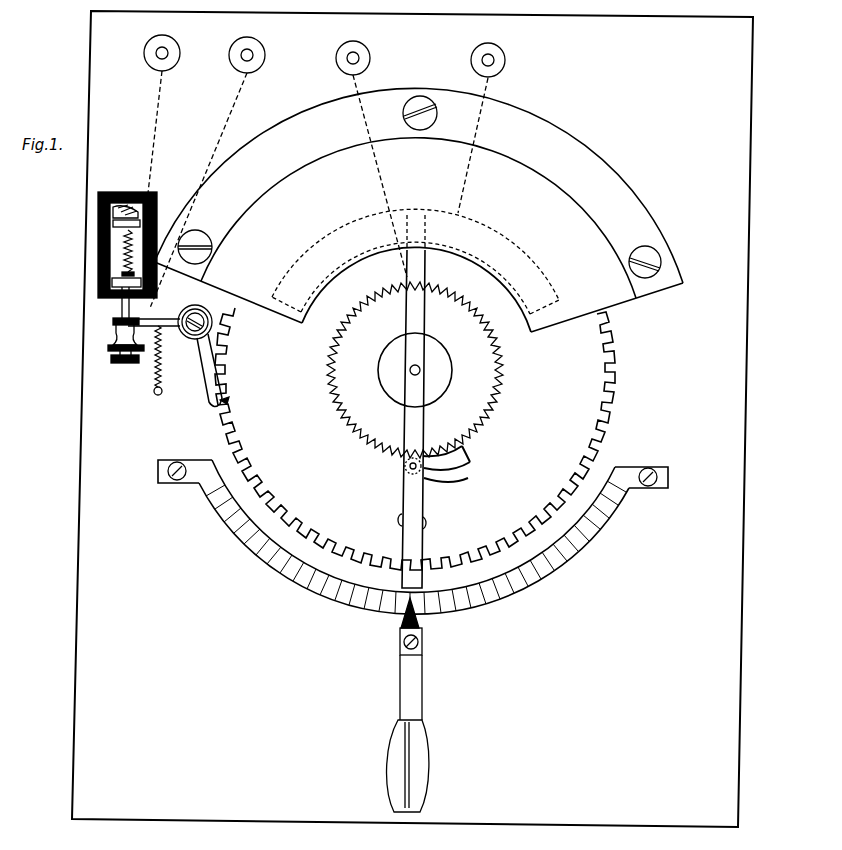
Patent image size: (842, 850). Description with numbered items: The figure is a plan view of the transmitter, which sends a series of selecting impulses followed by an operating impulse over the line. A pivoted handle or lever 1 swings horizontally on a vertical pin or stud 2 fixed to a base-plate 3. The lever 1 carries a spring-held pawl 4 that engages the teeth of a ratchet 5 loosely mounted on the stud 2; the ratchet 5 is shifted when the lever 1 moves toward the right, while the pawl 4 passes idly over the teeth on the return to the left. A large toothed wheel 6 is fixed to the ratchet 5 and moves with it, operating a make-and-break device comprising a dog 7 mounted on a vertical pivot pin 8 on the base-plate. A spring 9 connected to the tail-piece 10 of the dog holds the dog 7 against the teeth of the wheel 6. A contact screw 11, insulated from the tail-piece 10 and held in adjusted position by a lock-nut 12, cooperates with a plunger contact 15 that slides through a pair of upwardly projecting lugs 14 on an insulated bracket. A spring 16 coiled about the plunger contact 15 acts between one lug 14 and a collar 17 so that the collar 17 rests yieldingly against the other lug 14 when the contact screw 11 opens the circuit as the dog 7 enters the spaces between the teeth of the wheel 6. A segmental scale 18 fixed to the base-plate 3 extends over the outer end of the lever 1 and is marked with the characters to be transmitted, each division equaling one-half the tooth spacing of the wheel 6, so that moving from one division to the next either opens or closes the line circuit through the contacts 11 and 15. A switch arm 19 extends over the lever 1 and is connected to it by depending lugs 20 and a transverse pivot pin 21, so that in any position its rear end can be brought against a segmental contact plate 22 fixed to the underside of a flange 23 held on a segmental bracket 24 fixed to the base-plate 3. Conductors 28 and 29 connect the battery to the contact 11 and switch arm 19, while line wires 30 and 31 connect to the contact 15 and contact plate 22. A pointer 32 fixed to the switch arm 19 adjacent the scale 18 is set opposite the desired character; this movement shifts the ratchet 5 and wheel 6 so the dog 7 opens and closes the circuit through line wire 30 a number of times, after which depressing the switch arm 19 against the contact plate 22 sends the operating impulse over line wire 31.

The pivoted handle or lever 1 is at (422, 750).
The vertical pin or stud 2 is at (421, 370).
The base-plate 3 is at (722, 668).
The spring-held pawl 4 is at (448, 458).
The ratchet 5 is at (466, 424).
The large toothed wheel 6 is at (252, 428).
The dog 7 is at (200, 380).
The vertical pivot pin 8 is at (200, 308).
The spring 9 is at (158, 395).
The tail-piece 10 is at (194, 312).
The contact screw 11 is at (120, 363).
The lock-nut 12 is at (110, 340).
The upwardly projecting lugs 14 is at (120, 300).
The plunger contact 15 is at (113, 321).
The spring 16 is at (126, 258).
The collar 17 is at (127, 245).
The segmental scale 18 is at (545, 556).
The switch arm 19 is at (418, 661).
The depending lugs 20 is at (423, 514).
The transverse pivot pin 21 is at (427, 524).
The segmental contact plate 22 is at (532, 266).
The flange 23 is at (580, 307).
The segmental bracket 24 is at (627, 213).
The conductor 28 is at (213, 157).
The conductor 29 is at (383, 182).
The line wire 30 is at (155, 135).
The line wire 31 is at (477, 132).
The pointer 32 is at (420, 626).